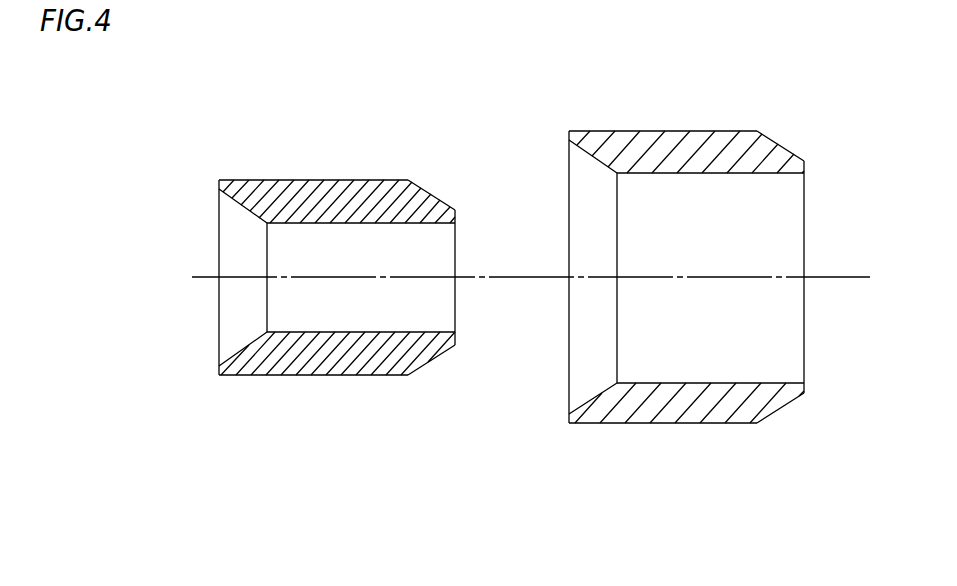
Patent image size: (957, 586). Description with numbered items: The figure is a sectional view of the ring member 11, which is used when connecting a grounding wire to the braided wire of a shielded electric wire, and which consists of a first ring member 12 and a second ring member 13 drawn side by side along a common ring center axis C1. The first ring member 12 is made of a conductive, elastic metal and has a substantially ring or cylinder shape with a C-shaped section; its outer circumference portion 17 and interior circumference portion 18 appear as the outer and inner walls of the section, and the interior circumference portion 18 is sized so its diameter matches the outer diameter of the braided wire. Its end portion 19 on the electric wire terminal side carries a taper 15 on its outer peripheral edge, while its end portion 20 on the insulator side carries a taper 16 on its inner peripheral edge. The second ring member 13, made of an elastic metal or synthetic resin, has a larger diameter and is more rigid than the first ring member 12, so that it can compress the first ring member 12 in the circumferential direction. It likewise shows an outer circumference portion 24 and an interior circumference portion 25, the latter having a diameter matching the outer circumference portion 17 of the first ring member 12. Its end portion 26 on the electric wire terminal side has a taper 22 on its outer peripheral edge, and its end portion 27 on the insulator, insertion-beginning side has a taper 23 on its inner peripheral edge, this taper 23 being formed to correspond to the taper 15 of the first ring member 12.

The ring member 11 is at (390, 78).
The first ring member 12 is at (380, 180).
The second ring member 13 is at (617, 131).
The taper 15 is at (428, 193).
The taper 16 is at (252, 214).
The outer circumference portion 17 is at (343, 180).
The interior circumference portion 18 is at (337, 308).
The end portion 19 is at (455, 313).
The end portion 20 is at (219, 313).
The taper 22 is at (783, 147).
The taper 23 is at (603, 165).
The outer circumference portion 24 is at (727, 131).
The interior circumference portion 25 is at (692, 358).
The end portion 26 is at (804, 338).
The end portion 27 is at (569, 242).
The ring center axis C1 is at (848, 277).